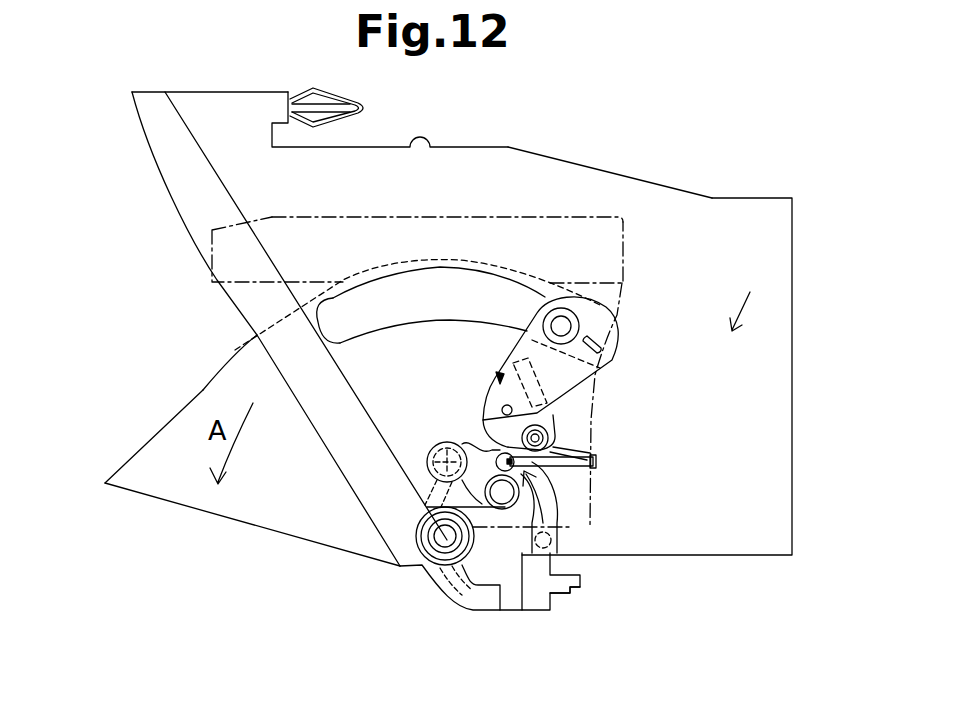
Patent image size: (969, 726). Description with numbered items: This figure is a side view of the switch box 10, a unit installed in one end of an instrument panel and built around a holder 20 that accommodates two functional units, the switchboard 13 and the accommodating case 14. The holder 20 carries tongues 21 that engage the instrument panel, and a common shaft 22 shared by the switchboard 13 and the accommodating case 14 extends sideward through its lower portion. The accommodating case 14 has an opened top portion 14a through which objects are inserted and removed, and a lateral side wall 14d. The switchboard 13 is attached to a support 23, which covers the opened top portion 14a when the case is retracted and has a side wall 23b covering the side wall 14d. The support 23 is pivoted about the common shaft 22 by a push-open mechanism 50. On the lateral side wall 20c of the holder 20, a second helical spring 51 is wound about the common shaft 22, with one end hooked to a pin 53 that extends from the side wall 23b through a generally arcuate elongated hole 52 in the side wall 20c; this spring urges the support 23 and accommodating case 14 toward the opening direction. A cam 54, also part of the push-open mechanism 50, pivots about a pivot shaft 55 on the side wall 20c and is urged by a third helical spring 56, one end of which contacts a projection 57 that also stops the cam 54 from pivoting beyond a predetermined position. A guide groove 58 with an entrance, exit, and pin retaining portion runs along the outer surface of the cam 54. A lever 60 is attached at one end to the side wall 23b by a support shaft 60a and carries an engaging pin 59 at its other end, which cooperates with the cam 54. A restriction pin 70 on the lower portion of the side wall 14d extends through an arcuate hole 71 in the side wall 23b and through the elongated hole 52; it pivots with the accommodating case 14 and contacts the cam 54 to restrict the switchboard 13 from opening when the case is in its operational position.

The switch box 10 is at (144, 229).
The switchboard 13 is at (455, 217).
The accommodating case 14 is at (138, 453).
The opened top portion 14a is at (203, 390).
The lateral side wall 14d is at (560, 512).
The holder 20 is at (687, 187).
The lateral side wall 20c is at (613, 192).
The tongue 21 is at (367, 107).
The common shaft 22 is at (420, 570).
The support 23 is at (625, 245).
The side wall 23b is at (393, 290).
The push-open mechanism 50 is at (747, 292).
The second helical spring 51 is at (412, 525).
The elongated hole 52 is at (490, 442).
The pin 53 is at (426, 466).
The cam 54 is at (497, 382).
The pivot shaft 55 is at (548, 432).
The third helical spring 56 is at (593, 455).
The projection 57 is at (590, 470).
The guide groove 58 is at (510, 363).
The engaging pin 59 is at (500, 407).
The lever 60 is at (618, 345).
The support shaft 60a is at (610, 310).
The restriction pin 70 is at (567, 545).
The arcuate hole 71 is at (512, 527).